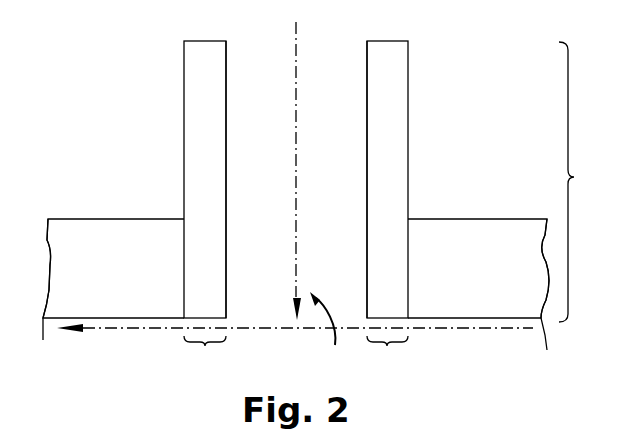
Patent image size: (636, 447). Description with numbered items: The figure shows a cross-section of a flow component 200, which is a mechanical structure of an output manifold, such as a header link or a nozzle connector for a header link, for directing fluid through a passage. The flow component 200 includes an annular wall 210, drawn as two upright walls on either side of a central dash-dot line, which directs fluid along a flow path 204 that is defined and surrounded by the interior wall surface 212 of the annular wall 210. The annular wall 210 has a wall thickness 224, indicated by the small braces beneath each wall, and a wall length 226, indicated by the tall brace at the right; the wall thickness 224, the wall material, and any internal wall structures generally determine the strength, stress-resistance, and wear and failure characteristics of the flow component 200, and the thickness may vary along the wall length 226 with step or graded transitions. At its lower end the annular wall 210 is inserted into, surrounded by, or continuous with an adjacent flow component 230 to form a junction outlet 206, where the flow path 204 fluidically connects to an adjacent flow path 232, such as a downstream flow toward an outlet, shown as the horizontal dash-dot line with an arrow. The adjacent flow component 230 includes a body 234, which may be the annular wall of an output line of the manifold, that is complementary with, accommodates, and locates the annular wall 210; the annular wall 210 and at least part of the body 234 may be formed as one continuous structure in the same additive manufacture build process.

The flow component 200 is at (128, 92).
The flow path 204 is at (296, 70).
The junction outlet 206 is at (333, 330).
The annular wall 210 is at (208, 41).
The interior wall surface 212 is at (227, 192).
The wall thickness 224 is at (296, 355).
The wall length 226 is at (589, 182).
The adjacent flow component 230 is at (128, 219).
The adjacent flow path 232 is at (137, 329).
The body 234 is at (65, 300).